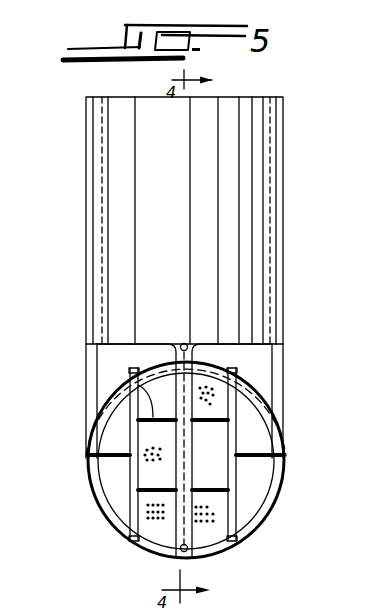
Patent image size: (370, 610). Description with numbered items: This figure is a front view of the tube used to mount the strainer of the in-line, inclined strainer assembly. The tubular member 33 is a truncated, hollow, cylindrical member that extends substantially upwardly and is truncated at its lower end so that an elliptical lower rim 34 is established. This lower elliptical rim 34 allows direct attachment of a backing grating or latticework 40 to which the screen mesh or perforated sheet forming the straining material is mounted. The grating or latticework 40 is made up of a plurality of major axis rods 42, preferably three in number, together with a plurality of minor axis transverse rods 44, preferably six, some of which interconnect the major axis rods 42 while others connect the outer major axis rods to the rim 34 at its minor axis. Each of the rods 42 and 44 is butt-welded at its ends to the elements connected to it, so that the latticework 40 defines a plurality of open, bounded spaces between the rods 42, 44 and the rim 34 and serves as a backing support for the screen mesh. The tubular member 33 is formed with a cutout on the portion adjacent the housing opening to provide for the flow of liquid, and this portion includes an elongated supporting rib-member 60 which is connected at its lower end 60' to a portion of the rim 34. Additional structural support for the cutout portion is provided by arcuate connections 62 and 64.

The tubular member 33 is at (287, 283).
The arcuate connection 64 is at (281, 366).
The arcuate connection 62 is at (88, 377).
The minor axis transverse rods 44 is at (138, 385).
The major axis rods 42 is at (233, 436).
The grating or latticework 40 is at (108, 513).
The lower elliptical rim 34 is at (252, 524).
The supporting rib-member 60 is at (244, 515).
The lower end of rib-member 60' is at (205, 568).